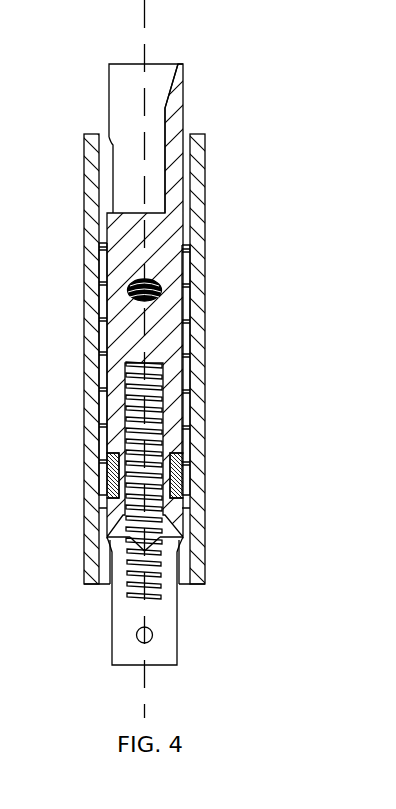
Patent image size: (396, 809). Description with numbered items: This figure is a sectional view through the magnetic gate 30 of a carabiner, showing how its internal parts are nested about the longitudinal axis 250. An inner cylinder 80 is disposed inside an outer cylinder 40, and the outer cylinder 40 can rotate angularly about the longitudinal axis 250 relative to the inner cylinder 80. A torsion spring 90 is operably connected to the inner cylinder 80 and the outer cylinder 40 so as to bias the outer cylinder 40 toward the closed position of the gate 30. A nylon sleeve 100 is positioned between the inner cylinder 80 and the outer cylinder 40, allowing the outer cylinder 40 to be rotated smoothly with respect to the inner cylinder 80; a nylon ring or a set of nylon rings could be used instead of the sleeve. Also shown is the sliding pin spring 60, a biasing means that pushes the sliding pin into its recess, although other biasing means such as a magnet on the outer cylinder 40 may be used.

The longitudinal axis 250 is at (143, 27).
The inner cylinder 80 is at (173, 111).
The outer cylinder 40 is at (199, 177).
The sliding pin spring 60 is at (159, 284).
The nylon sleeve 100 is at (185, 383).
The torsion spring 90 is at (108, 486).
The magnetic gate 30 is at (238, 517).